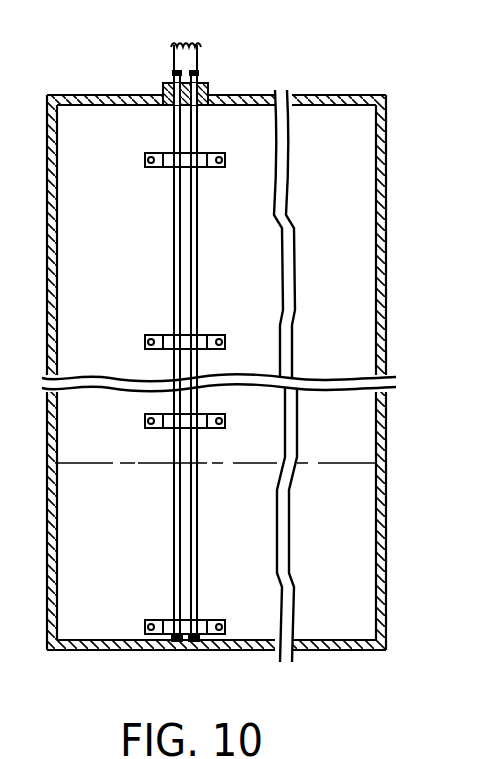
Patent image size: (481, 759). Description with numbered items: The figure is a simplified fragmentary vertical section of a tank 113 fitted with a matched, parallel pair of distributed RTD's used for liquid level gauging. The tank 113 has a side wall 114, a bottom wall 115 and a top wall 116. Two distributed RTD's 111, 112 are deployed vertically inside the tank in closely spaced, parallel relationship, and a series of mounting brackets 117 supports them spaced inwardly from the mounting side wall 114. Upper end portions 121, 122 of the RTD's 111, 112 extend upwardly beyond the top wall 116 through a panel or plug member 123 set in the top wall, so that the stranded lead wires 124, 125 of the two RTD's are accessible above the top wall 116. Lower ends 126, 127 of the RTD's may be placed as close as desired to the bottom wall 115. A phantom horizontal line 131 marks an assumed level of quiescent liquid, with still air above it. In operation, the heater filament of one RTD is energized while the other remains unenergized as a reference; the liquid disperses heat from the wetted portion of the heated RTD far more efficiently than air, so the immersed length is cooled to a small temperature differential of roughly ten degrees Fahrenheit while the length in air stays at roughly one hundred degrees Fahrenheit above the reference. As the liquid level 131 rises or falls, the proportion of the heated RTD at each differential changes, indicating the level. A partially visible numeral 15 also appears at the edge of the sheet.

The tank 113 is at (261, 359).
The side wall 114 is at (57, 288).
The bottom wall 115 is at (244, 640).
The top wall 116 is at (330, 97).
The mounting brackets 117 is at (145, 160).
The distributed RTD 111 is at (174, 205).
The distributed RTD 112 is at (197, 203).
The upper end portion 121 is at (174, 78).
The upper end portion 122 is at (197, 78).
The plug member 123 is at (166, 105).
The stranded lead wires 124 is at (174, 53).
The stranded lead wires 125 is at (197, 53).
The lower end 126 is at (168, 647).
The lower end 127 is at (197, 652).
The phantom horizontal line 131 is at (147, 462).
The partial numeral 15 is at (474, 204).